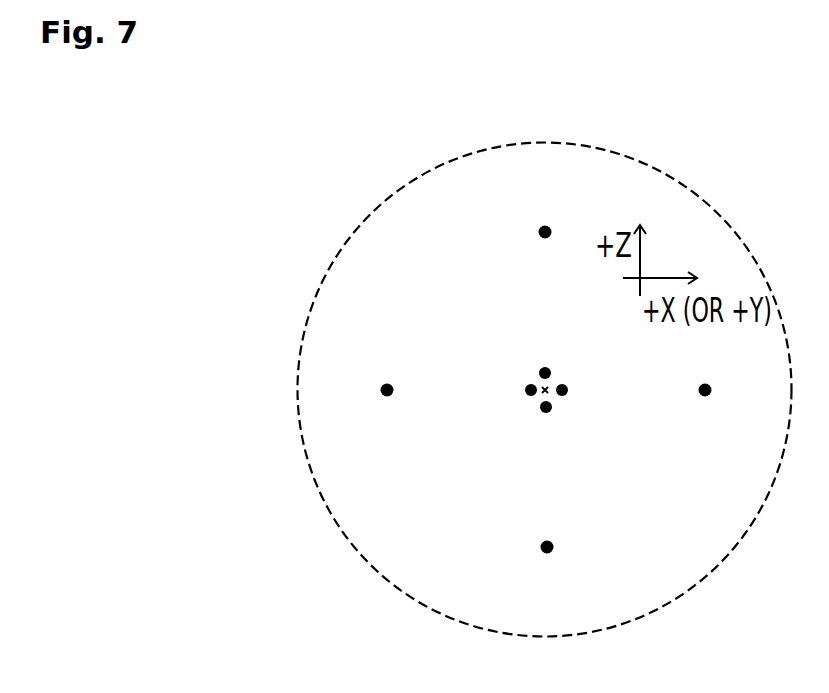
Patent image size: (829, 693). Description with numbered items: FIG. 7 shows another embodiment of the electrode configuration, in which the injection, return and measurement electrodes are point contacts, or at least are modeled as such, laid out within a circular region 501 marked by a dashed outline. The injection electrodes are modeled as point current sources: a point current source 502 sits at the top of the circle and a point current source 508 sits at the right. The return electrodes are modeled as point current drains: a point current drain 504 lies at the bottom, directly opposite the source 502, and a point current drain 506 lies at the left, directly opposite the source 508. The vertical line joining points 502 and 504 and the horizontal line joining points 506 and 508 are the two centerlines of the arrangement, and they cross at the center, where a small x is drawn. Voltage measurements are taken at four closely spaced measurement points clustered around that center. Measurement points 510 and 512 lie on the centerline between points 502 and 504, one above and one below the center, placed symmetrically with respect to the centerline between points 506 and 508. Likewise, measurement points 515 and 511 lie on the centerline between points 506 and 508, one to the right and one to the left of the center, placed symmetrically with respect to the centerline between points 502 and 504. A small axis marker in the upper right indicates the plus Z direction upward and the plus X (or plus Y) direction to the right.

The circular field / mirror aperture 501 is at (460, 621).
The point current source 502 is at (538, 236).
The point current drain 504 is at (540, 550).
The point current drain 506 is at (380, 394).
The point current source 508 is at (697, 393).
The measurement point 510 is at (543, 367).
The measurement point 511 is at (525, 388).
The measurement point 512 is at (540, 410).
The measurement point 515 is at (567, 388).